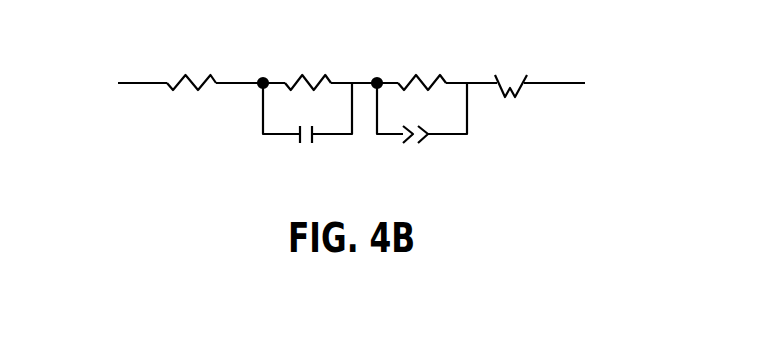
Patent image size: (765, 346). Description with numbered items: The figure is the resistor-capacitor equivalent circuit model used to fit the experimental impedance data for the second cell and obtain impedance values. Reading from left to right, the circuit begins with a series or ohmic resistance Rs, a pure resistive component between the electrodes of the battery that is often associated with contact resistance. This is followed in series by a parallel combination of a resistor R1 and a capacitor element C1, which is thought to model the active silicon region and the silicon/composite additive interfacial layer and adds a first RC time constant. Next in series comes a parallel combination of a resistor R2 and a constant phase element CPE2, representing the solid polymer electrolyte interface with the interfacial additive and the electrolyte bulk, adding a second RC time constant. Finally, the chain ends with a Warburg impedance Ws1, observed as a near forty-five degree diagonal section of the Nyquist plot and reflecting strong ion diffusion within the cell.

The series resistance Rs is at (191, 62).
The resistor R1 is at (308, 62).
The capacitor element C1 is at (307, 113).
The resistor R2 is at (422, 62).
The constant phase element CPE2 is at (422, 113).
The Warburg impedance Ws1 is at (512, 69).